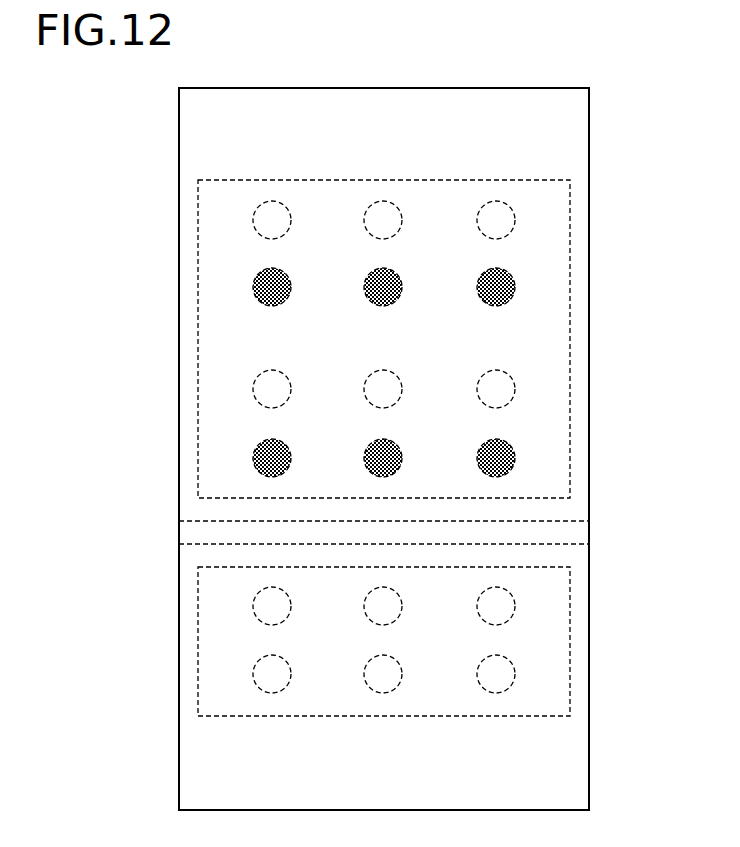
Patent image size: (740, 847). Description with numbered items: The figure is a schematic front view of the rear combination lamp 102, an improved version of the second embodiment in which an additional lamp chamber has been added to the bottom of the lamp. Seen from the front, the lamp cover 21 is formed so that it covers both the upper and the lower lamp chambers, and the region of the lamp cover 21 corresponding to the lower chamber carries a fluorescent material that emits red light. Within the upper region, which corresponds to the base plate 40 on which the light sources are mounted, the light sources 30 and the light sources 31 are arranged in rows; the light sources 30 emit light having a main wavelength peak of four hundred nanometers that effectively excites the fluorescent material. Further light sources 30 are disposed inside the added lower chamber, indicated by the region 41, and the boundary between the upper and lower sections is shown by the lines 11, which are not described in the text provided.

The rear combination lamp 102 is at (379, 449).
The lamp cover 21 is at (190, 145).
The light sources 30 is at (255, 218).
The light sources 31 is at (253, 282).
The base plate 40 is at (553, 368).
The lower mounting region 41 is at (549, 659).
The wiring lines 11 is at (570, 535).